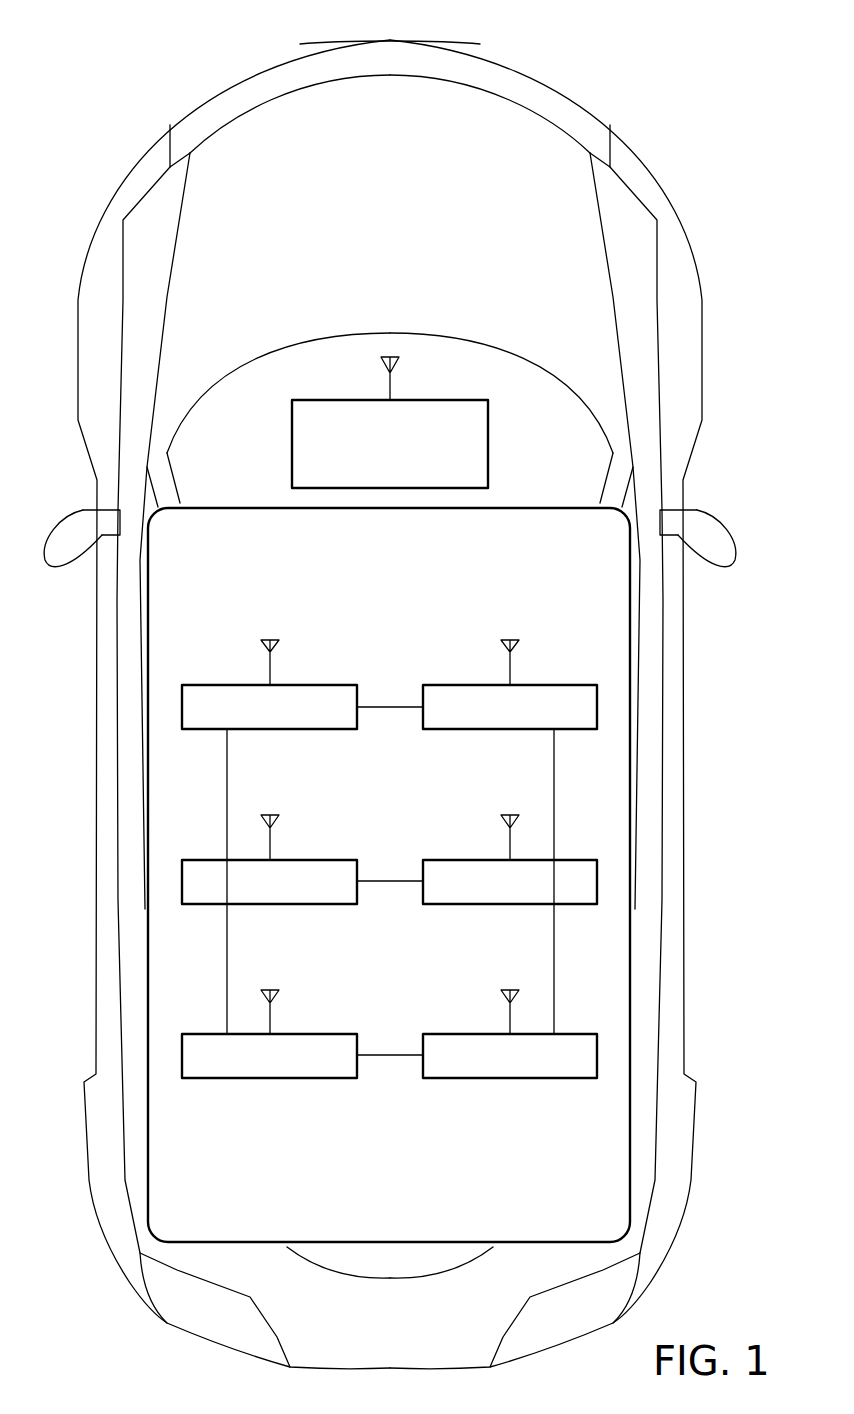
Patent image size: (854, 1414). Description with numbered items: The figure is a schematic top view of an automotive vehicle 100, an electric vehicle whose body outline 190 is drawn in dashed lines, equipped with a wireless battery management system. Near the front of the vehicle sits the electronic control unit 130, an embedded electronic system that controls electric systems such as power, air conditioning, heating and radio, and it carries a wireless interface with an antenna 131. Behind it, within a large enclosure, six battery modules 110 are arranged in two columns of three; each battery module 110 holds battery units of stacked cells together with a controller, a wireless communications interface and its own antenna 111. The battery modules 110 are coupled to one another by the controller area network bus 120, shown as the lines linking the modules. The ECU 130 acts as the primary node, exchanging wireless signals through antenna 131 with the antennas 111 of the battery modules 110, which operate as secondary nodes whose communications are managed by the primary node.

The automotive vehicle 100 is at (198, 55).
The vehicle body 190 is at (518, 62).
The electronic control unit 130 is at (292, 444).
The antenna 131 is at (382, 367).
The battery modules 110 is at (216, 685).
The antenna 111 is at (267, 640).
The controller area network bus 120 is at (390, 1058).